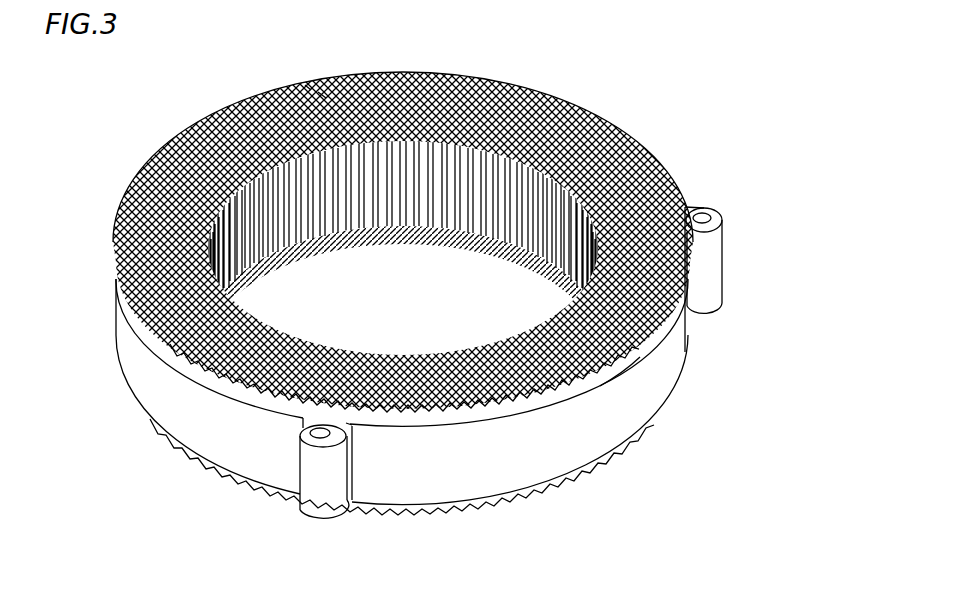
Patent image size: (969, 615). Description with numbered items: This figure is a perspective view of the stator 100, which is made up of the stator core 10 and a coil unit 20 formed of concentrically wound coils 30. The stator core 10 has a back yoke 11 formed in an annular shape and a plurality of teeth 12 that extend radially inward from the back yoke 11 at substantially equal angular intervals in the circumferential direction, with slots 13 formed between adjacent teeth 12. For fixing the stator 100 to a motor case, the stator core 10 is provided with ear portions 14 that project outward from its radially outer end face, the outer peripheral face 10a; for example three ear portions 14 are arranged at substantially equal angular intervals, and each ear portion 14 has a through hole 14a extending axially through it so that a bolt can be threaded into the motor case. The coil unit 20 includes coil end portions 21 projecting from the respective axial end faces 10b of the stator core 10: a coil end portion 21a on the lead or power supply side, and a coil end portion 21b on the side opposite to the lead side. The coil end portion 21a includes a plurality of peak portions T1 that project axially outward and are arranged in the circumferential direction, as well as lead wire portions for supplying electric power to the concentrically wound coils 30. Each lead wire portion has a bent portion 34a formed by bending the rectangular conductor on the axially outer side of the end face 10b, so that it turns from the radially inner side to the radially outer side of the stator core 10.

The stator 100 is at (748, 118).
The stator core 10 is at (448, 341).
The outer peripheral face 10a is at (637, 423).
The axial end face 10b is at (610, 360).
The back yoke 11 is at (633, 333).
The teeth 12 is at (543, 387).
The slots 13 is at (528, 407).
The ear portion 14 is at (712, 271).
The through hole 14a is at (703, 206).
The coil unit 20 is at (262, 78).
The coil end portions 21 is at (143, 167).
The coil end portion on the lead side 21a is at (403, 242).
The coil end portion on the side opposite to the lead side 21b is at (387, 510).
The concentrically wound coils 30 is at (493, 80).
The bent portion 34a is at (322, 90).
The peak portions T1 is at (307, 83).